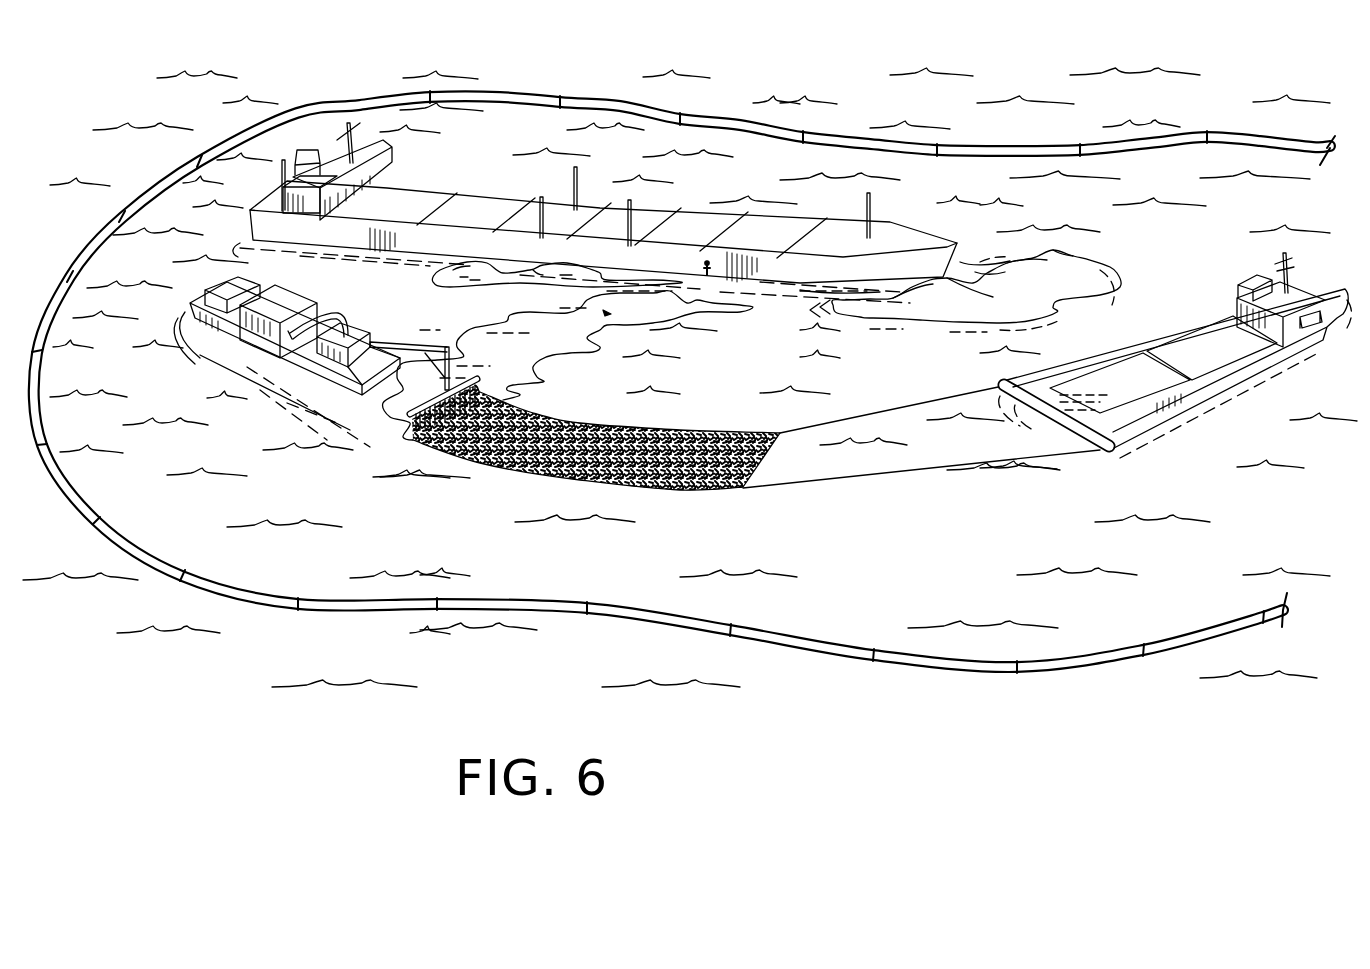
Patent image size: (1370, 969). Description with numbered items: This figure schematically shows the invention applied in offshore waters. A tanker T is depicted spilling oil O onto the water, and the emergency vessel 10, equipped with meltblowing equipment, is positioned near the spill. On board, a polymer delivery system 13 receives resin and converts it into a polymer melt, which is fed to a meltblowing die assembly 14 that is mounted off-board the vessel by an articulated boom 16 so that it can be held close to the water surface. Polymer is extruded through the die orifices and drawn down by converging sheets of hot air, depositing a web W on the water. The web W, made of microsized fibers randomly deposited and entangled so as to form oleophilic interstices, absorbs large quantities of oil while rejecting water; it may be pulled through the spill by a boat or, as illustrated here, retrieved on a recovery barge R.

The tanker T is at (472, 208).
The vessel 10 is at (252, 346).
The polymer delivery system 13 is at (358, 326).
The articulated boom 16 is at (413, 343).
The meltblowing die assembly 14 is at (487, 397).
The web W is at (690, 438).
The recovery barge R is at (1199, 328).
The oil O is at (752, 345).